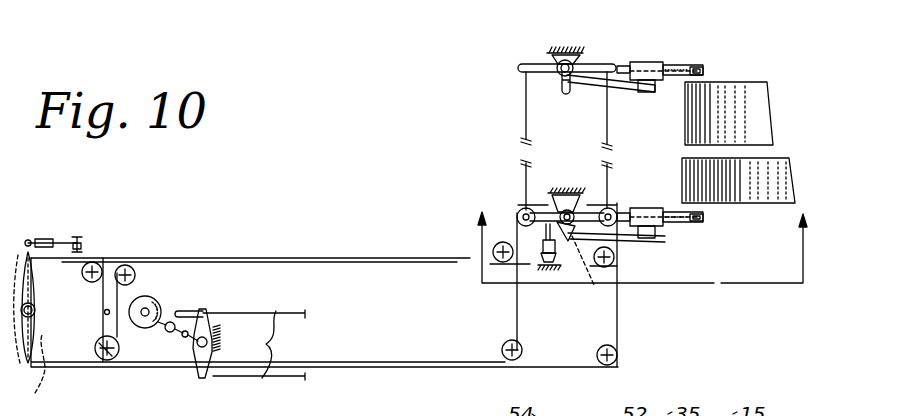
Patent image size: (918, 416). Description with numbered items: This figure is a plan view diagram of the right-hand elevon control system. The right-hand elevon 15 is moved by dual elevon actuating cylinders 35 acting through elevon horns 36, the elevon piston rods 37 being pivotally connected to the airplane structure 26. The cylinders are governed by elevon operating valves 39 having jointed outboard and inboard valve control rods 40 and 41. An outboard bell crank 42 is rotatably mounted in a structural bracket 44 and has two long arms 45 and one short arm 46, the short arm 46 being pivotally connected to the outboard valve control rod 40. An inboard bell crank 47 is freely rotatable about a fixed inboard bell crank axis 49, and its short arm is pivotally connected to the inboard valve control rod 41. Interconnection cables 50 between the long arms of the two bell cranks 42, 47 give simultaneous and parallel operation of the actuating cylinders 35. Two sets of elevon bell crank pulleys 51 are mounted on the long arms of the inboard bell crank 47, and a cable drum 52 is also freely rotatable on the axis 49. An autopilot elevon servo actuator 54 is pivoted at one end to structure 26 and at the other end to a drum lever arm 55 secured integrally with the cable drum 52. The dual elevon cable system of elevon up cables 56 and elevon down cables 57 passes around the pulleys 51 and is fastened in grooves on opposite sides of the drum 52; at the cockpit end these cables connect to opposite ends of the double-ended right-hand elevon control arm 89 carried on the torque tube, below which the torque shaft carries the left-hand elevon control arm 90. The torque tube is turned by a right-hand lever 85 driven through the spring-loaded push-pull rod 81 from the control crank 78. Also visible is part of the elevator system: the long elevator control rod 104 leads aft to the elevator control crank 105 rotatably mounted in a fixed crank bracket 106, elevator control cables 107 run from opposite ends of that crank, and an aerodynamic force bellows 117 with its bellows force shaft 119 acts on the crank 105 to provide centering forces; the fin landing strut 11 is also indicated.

The fin landing strut 11 is at (640, 262).
The right-hand elevon 15 is at (800, 182).
The airplane structure 26 is at (545, 55).
The elevon actuating cylinders 35 is at (648, 62).
The elevon horns 36 is at (703, 68).
The elevon piston rods 37 is at (620, 66).
The elevon operating valves 39 is at (655, 88).
The outboard valve control rod 40 is at (592, 85).
The inboard valve control rod 41 is at (615, 238).
The outboard bell crank 42 is at (538, 62).
The structural bracket 44 is at (561, 30).
The long arms 45 is at (583, 78).
The short arm 46 is at (565, 88).
The inboard bell crank 47 is at (532, 195).
The inboard bell crank axis 49 is at (577, 210).
The interconnection cables 50 is at (527, 106).
The elevon bell crank pulleys 51 is at (520, 212).
The cable drum 52 is at (562, 263).
The autopilot elevon servo actuator 54 is at (545, 256).
The drum lever arm 55 is at (562, 215).
The elevon "up" cables 56 is at (66, 292).
The elevon "down" cables 57 is at (70, 360).
The control crank 78 is at (82, 236).
The push-pull rod 81 is at (47, 238).
The right-hand lever 85 is at (27, 246).
The right-hand elevon control arm 89 is at (37, 292).
The left-hand elevon control arm 90 is at (31, 374).
The elevator control rod 104 is at (190, 310).
The elevator control crank 105 is at (208, 325).
The crank bracket 106 is at (213, 358).
The elevator control cables 107 is at (259, 345).
The aerodynamic force bellows 117 is at (147, 328).
The bellows force shaft 119 is at (166, 334).